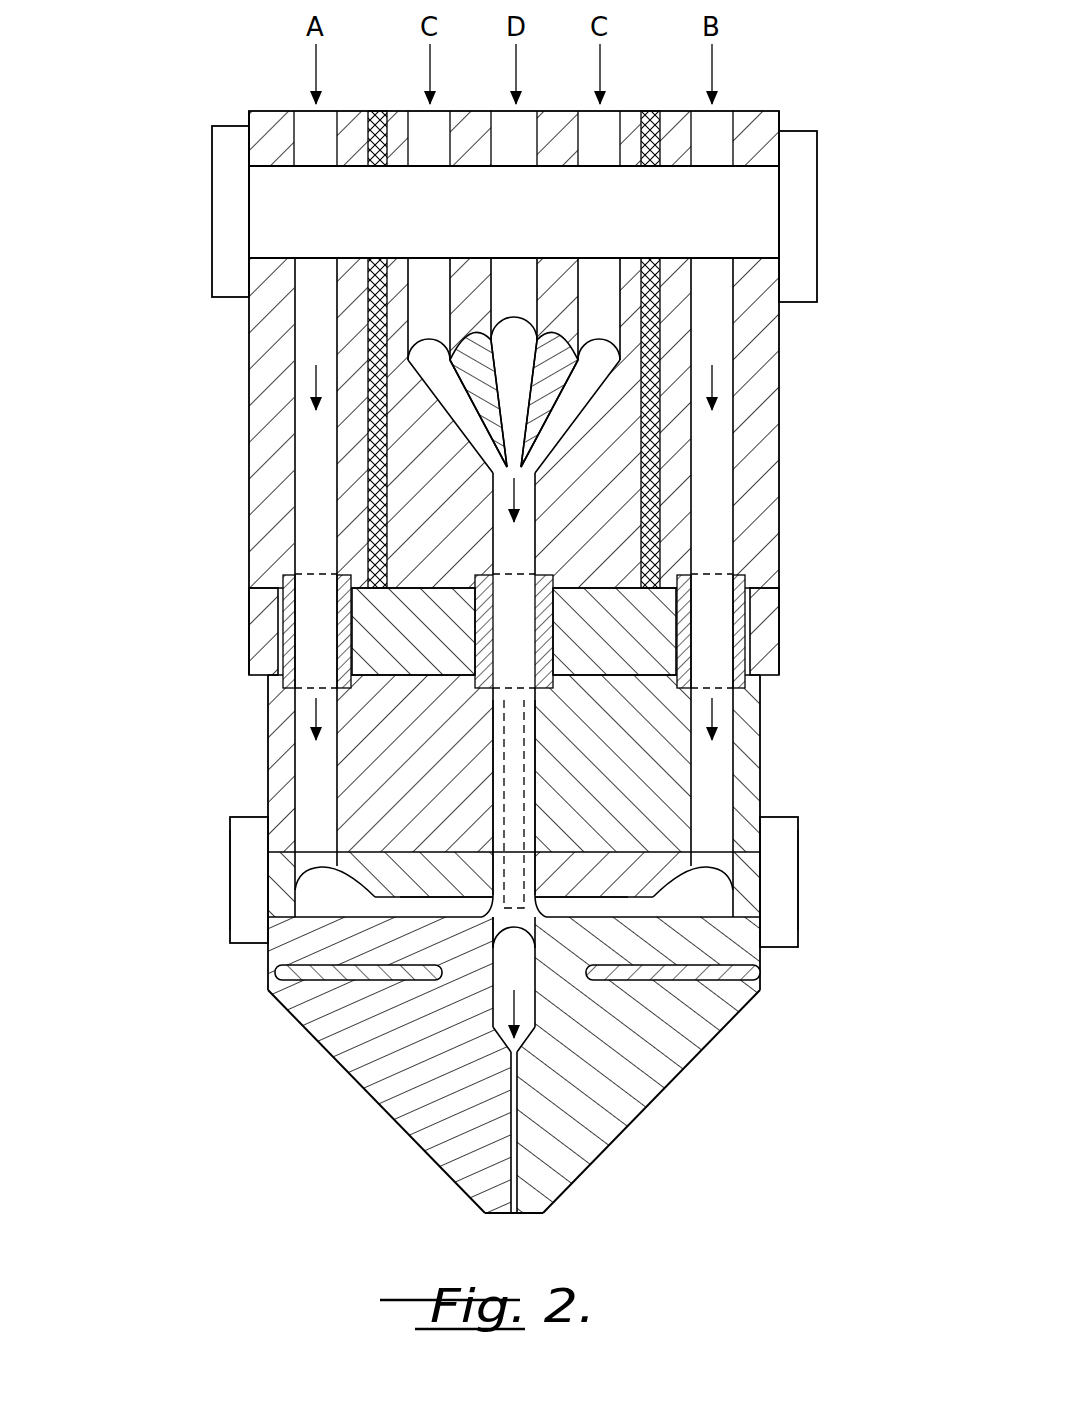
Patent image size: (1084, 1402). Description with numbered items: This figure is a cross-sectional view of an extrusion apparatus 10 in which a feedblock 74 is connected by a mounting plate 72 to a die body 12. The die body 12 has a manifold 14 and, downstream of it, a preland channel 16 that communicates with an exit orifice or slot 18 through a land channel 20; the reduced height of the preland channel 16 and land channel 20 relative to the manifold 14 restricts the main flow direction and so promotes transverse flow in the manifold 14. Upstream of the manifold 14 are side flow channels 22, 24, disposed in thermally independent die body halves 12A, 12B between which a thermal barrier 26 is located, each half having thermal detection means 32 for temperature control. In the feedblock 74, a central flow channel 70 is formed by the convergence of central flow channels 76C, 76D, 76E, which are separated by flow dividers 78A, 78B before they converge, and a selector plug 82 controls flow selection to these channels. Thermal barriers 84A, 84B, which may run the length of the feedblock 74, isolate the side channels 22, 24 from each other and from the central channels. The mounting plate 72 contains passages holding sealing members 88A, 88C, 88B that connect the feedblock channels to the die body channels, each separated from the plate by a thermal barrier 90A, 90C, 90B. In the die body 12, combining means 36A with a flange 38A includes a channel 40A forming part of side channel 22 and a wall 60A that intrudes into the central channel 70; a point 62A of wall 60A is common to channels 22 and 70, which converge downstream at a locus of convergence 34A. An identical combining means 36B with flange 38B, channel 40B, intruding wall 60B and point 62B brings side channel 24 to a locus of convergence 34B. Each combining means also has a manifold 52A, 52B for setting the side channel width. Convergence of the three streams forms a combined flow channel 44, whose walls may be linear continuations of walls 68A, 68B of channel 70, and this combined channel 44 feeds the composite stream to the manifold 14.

The extrusion apparatus 10 is at (183, 143).
The die body 12 is at (266, 742).
The die body half 12A is at (354, 1094).
The die body half 12B is at (653, 1099).
The manifold 14 is at (527, 981).
The preland channel 16 is at (516, 1100).
The exit orifice or slot 18 is at (514, 1213).
The land channel 20 is at (517, 1186).
The side flow channel 22 is at (330, 337).
The side flow channel 24 is at (725, 333).
The thermal barrier 26 is at (530, 737).
The thermal detection means 32 is at (278, 972).
The locus of convergence 34A is at (485, 908).
The locus of convergence 34B is at (540, 908).
The combining means 36A is at (235, 815).
The combining means 36B is at (790, 815).
The flange 38A is at (232, 864).
The flange 38B is at (800, 864).
The channel 40A is at (420, 903).
The channel 40B is at (626, 905).
The combined flow channel 44 is at (488, 925).
The manifold 52A is at (340, 908).
The manifold 52B is at (712, 905).
The intruding wall 60A is at (503, 858).
The intruding wall 60B is at (528, 858).
The point 62A is at (482, 866).
The point 62B is at (550, 866).
The wall 68A is at (500, 772).
The wall 68B is at (545, 784).
The central flow channel 70 is at (530, 534).
The mounting plate 72 is at (246, 620).
The feedblock 74 is at (246, 421).
The central flow channel 76C is at (422, 282).
The central flow channel 76D is at (509, 277).
The central flow channel 76E is at (598, 291).
The flow divider 78A is at (470, 408).
The flow divider 78B is at (557, 403).
The selector plug 82 is at (704, 223).
The thermal barrier 84A is at (370, 492).
The thermal barrier 84B is at (657, 480).
The sealing member 88A is at (288, 576).
The sealing member 88B is at (740, 577).
The sealing member 88C is at (479, 580).
The thermal barrier 90A is at (284, 642).
The thermal barrier 90B is at (748, 645).
The thermal barrier 90C is at (474, 654).